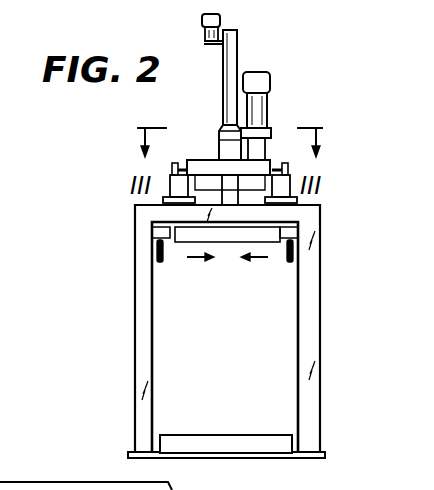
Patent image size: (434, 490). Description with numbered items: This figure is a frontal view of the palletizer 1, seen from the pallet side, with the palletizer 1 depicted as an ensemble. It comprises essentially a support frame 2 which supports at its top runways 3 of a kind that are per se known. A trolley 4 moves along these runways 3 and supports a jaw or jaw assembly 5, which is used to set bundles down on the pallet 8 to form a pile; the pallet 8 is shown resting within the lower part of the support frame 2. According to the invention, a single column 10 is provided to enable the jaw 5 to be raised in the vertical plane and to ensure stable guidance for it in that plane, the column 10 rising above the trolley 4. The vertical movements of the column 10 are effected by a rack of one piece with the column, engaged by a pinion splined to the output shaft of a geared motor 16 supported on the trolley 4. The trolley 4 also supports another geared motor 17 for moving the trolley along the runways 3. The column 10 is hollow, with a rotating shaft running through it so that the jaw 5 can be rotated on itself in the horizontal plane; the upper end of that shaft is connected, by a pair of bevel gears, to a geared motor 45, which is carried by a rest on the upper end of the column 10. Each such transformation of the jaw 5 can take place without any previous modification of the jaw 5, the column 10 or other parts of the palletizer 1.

The palletizer 1 is at (284, 150).
The support frame 2 is at (146, 390).
The runways 3 is at (172, 176).
The trolley 4 is at (216, 161).
The jaw assembly 5 is at (233, 247).
The pallet 8 is at (190, 447).
The column 10 is at (237, 48).
The geared motor 16 is at (270, 86).
The geared motor 17 is at (219, 133).
The geared motor 45 is at (204, 43).